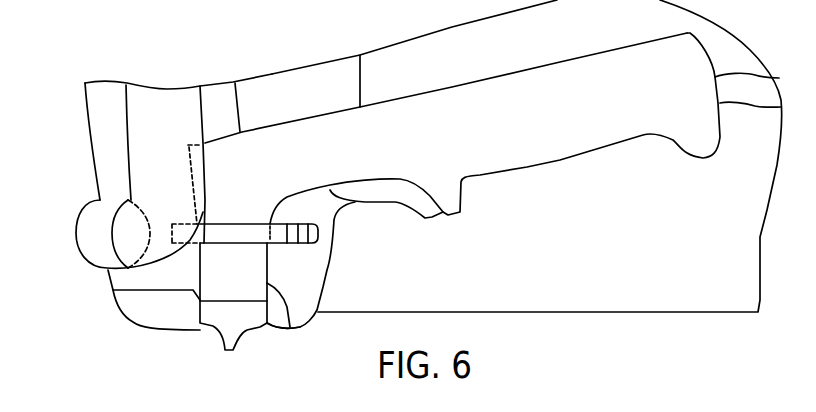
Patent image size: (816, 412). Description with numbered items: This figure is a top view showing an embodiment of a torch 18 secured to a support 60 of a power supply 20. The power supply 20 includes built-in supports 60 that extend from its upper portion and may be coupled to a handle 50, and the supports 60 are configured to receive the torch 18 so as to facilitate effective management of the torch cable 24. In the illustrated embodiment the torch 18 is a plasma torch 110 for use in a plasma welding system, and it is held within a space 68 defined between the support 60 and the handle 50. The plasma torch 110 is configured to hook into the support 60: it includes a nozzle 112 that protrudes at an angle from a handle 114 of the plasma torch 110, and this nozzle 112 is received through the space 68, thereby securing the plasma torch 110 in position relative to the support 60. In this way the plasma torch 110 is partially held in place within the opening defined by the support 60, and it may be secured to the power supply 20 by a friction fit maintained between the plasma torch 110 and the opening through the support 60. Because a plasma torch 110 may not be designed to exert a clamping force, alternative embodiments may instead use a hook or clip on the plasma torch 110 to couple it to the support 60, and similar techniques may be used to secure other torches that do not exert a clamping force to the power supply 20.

The power supply 20 is at (71, 112).
The handle 50 is at (170, 188).
The support 60 is at (238, 233).
The space 68 is at (262, 249).
The nozzle 112 is at (290, 328).
The torch 18 is at (446, 71).
The plasma torch 110 is at (461, 72).
The handle of the plasma torch 114 is at (525, 160).
The torch cable 24 is at (747, 88).